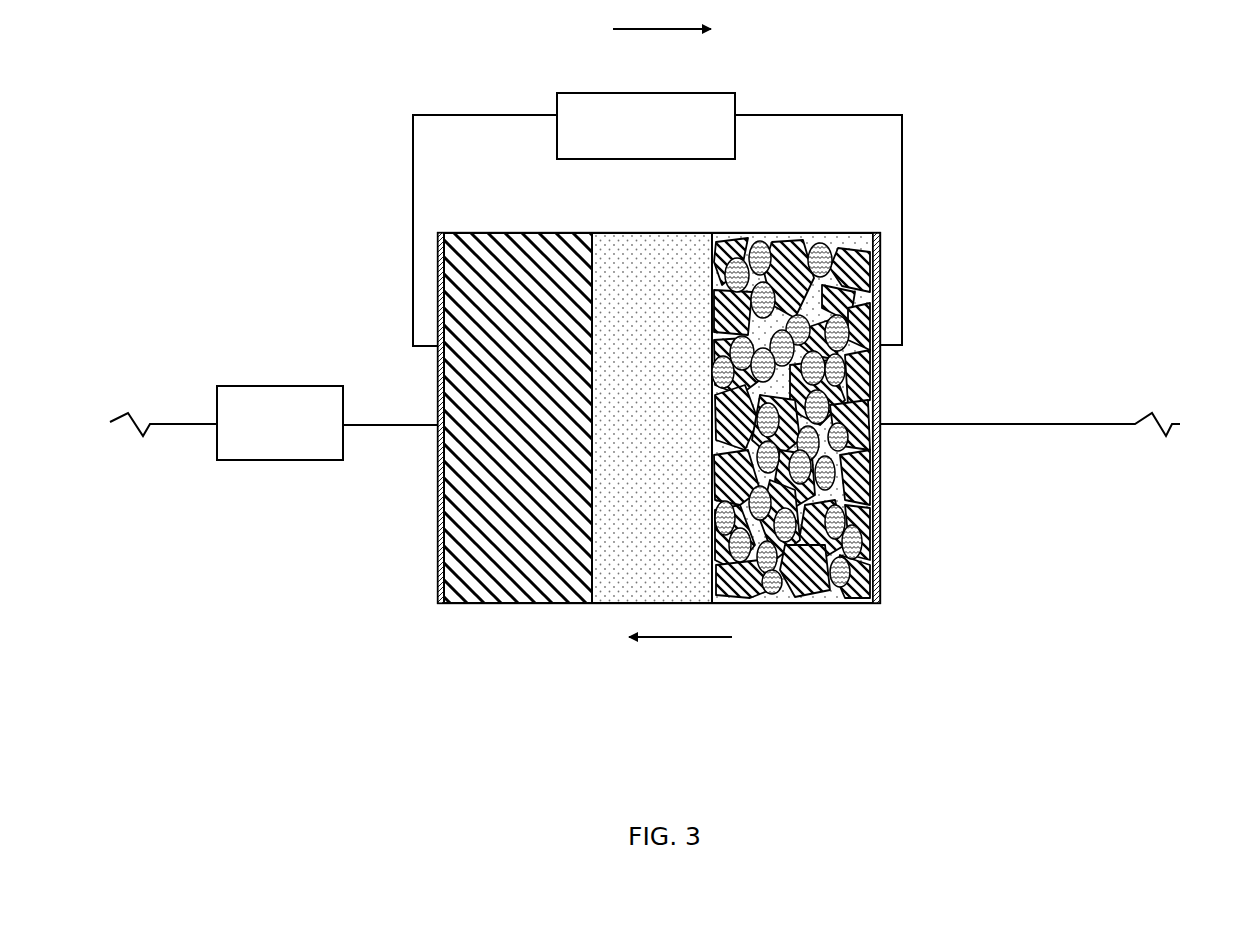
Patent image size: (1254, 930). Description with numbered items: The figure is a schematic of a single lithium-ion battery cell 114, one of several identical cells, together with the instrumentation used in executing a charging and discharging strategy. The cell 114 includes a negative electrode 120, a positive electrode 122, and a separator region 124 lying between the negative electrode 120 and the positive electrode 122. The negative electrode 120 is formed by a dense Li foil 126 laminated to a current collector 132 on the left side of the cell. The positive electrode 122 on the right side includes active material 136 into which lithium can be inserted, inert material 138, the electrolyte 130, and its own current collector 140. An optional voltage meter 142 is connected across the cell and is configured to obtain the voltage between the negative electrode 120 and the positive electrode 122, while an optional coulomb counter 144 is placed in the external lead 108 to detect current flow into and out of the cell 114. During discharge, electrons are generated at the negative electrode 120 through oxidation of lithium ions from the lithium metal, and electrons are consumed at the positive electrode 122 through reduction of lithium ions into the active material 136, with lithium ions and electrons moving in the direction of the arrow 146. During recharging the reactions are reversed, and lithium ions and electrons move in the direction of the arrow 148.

The anode lead 108 is at (391, 372).
The lithium-ion battery cell 114 is at (1132, 162).
The negative electrode 120 is at (316, 256).
The positive electrode 122 is at (1000, 514).
The separator region 124 is at (604, 603).
The dense Li foil 126 is at (453, 603).
The electrolyte 130 is at (841, 423).
The current collector 132 is at (437, 567).
The active material 136 is at (757, 245).
The inert material 138 is at (855, 242).
The current collector 140 is at (880, 455).
The voltage meter 142 is at (730, 93).
The coulomb counter 144 is at (232, 386).
The arrow 146 is at (613, 29).
The arrow 148 is at (648, 640).